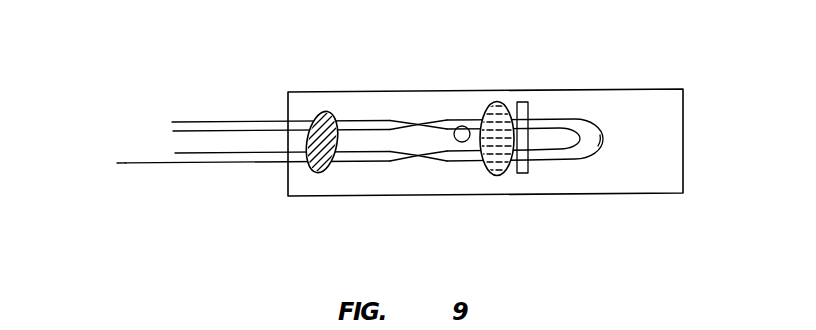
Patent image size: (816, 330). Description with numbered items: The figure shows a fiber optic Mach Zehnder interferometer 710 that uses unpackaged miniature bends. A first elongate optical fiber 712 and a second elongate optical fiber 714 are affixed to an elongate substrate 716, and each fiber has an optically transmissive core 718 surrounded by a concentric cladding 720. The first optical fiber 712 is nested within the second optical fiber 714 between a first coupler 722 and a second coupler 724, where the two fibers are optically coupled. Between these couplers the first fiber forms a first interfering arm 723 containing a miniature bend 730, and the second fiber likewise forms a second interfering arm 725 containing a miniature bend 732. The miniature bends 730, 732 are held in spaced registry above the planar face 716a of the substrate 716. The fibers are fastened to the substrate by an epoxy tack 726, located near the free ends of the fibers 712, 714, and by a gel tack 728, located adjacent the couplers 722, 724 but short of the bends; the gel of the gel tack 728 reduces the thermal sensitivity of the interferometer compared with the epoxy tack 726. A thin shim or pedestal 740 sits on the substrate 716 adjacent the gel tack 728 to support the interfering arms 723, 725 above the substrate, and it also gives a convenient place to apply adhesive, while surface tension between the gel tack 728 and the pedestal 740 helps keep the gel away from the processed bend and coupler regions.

The fiber optic Mach Zehnder interferometer 710 is at (478, 23).
The first elongate optical fiber 712 is at (181, 153).
The second elongate optical fiber 714 is at (196, 121).
The elongate substrate 716 is at (684, 193).
The planar face 716a is at (583, 180).
The optically transmissive core 718 is at (117, 163).
The concentric cladding 720 is at (134, 166).
The first coupler 722 is at (419, 137).
The first interfering arm 723 is at (456, 126).
The second coupler 724 is at (404, 163).
The second interfering arm 725 is at (450, 119).
The epoxy tack 726 is at (317, 169).
The gel tack 728 is at (493, 175).
The miniature bend 730 is at (575, 119).
The miniature bend 732 is at (602, 141).
The pedestal 740 is at (528, 102).